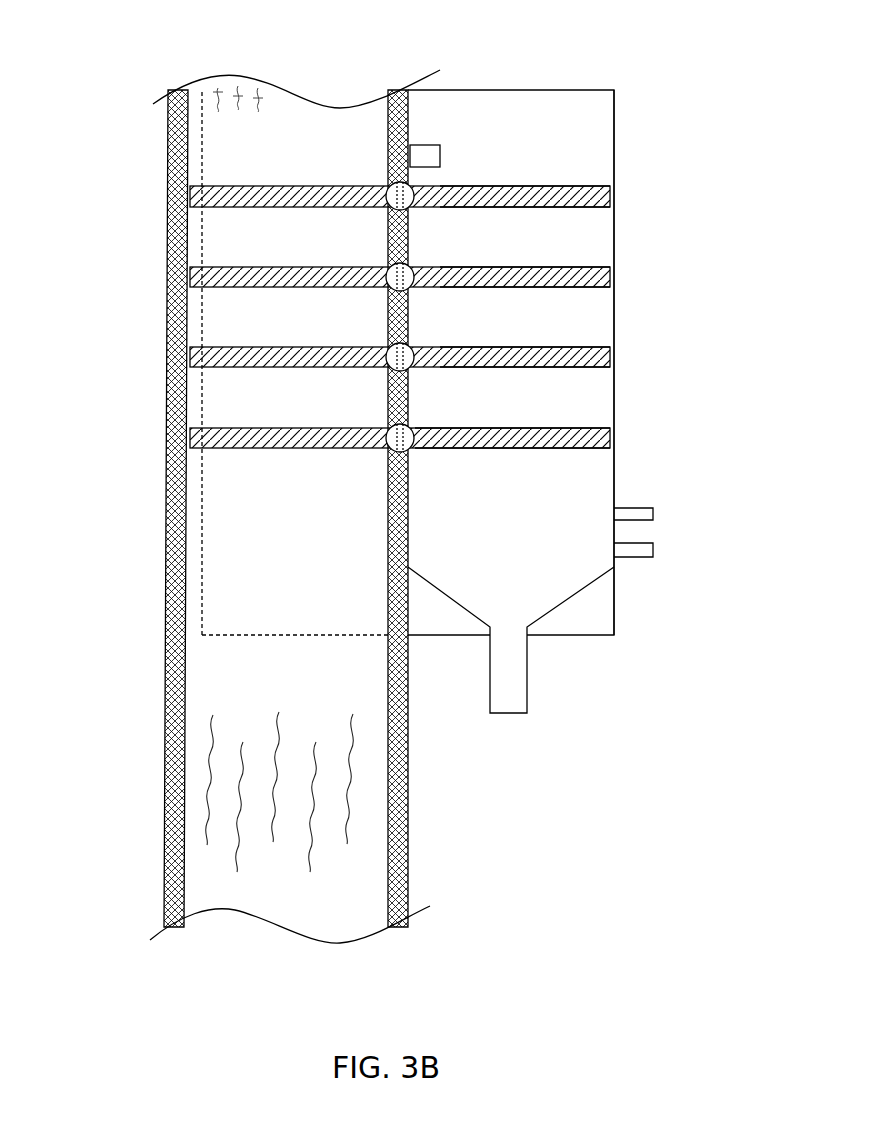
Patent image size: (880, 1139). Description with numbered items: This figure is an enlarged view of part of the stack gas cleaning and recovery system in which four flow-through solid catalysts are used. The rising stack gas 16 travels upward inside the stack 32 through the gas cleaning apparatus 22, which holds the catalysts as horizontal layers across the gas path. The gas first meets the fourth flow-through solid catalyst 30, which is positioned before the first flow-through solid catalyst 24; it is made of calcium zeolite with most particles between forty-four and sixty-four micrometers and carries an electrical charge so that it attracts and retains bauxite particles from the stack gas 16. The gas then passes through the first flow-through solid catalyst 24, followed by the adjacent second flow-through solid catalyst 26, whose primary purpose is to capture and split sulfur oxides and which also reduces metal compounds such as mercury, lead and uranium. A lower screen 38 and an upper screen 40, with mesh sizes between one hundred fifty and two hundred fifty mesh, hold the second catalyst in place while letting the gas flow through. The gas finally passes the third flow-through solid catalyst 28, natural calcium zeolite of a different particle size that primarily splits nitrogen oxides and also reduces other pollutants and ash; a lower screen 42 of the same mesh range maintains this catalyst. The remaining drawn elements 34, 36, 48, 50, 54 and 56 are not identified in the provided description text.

The stack gas 16 is at (215, 815).
The gas cleaning apparatus 22 is at (638, 339).
The first flow-through solid catalyst 24 is at (167, 352).
The second flow-through solid catalyst 26 is at (167, 272).
The third flow-through solid catalyst 28 is at (167, 190).
The fourth flow-through solid catalyst 30 is at (167, 425).
The stack 32 is at (167, 734).
The tube bottom surface 34 is at (505, 369).
The tube top surface 36 is at (519, 345).
The lower screen 38 is at (586, 289).
The upper screen 40 is at (587, 265).
The lower screen 42 is at (482, 184).
The tube surfaces 48 is at (428, 427).
The condensate drain 50 is at (515, 705).
The housing 54 is at (537, 98).
The coolant inlet/outlet connections 56 is at (562, 585).